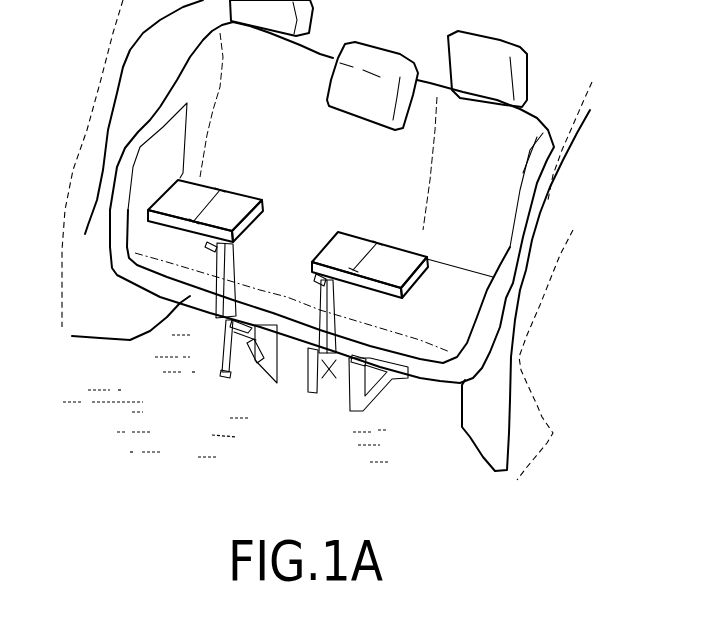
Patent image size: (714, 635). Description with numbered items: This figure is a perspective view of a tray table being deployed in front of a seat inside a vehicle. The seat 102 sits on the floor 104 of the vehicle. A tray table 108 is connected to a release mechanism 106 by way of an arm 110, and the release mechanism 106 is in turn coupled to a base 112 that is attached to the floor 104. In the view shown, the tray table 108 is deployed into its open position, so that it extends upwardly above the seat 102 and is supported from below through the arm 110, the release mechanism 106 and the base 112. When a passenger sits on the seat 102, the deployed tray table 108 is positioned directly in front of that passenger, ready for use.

The seat 102 is at (337, 240).
The floor 104 is at (213, 412).
The release mechanism 106 is at (369, 431).
The tray table 108 is at (379, 346).
The arm 110 is at (290, 379).
The base 112 is at (216, 388).